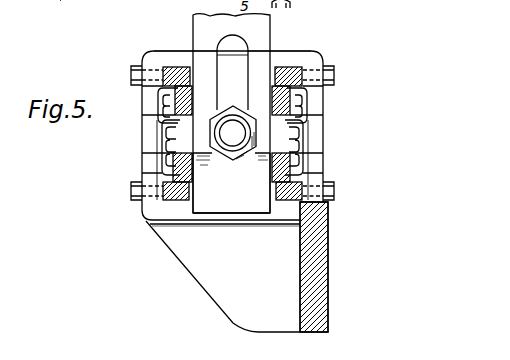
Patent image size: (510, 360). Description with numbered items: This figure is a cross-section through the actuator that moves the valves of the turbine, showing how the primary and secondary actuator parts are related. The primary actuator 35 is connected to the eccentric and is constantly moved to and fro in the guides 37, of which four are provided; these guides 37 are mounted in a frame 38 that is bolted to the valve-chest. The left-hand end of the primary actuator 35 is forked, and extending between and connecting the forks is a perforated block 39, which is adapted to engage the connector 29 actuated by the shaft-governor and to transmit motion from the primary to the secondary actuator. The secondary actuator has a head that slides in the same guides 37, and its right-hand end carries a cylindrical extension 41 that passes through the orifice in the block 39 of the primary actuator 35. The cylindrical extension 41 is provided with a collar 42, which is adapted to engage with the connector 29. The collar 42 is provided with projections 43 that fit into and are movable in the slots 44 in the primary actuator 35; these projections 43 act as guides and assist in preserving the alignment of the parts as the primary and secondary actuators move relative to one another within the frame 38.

The connector 29 is at (203, 23).
The primary actuator 35 is at (162, 169).
The guides 37 is at (176, 67).
The frame 38 is at (300, 56).
The perforated block 39 is at (73, 7).
The cylindrical extension 41 is at (232, 125).
The collar 42 is at (230, 164).
The projections 43 is at (176, 149).
The slots 44 is at (160, 116).